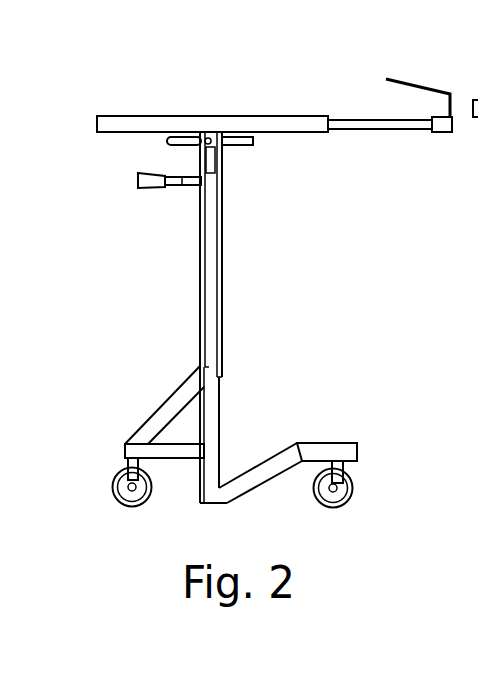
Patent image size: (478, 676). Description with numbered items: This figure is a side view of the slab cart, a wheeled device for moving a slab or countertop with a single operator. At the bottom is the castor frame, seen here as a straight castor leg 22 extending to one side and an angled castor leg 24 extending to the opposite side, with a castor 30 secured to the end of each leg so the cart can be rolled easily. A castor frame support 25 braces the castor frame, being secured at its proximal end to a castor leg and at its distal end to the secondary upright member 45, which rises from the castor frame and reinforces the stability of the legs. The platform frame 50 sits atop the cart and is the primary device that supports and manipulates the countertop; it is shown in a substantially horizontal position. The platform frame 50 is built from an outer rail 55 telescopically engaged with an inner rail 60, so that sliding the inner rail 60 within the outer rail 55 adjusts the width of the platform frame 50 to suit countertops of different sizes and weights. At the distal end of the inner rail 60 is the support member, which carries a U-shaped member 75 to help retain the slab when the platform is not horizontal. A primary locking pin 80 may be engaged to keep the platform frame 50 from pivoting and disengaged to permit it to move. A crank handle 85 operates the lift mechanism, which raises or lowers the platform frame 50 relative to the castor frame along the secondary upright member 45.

The straight castor leg 22 is at (186, 453).
The angled castor leg 24 is at (272, 467).
The castor frame support 25 is at (158, 418).
The castor 30 is at (133, 505).
The secondary upright member 45 is at (208, 302).
The platform frame 50 is at (110, 122).
The outer rail 55 is at (192, 122).
The inner rail 60 is at (410, 133).
The U-shaped member 75 is at (426, 88).
The primary locking pin 80 is at (165, 139).
The crank handle 85 is at (152, 190).